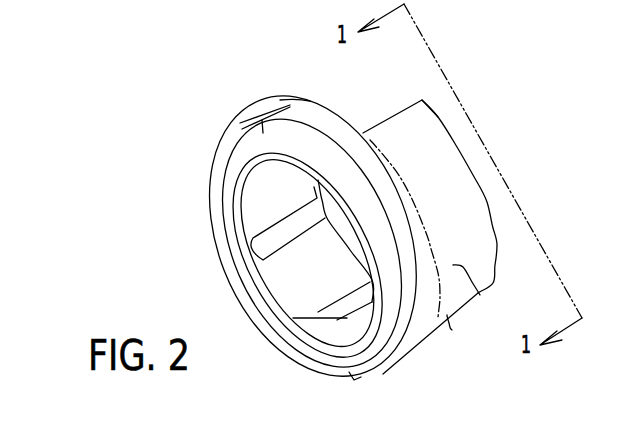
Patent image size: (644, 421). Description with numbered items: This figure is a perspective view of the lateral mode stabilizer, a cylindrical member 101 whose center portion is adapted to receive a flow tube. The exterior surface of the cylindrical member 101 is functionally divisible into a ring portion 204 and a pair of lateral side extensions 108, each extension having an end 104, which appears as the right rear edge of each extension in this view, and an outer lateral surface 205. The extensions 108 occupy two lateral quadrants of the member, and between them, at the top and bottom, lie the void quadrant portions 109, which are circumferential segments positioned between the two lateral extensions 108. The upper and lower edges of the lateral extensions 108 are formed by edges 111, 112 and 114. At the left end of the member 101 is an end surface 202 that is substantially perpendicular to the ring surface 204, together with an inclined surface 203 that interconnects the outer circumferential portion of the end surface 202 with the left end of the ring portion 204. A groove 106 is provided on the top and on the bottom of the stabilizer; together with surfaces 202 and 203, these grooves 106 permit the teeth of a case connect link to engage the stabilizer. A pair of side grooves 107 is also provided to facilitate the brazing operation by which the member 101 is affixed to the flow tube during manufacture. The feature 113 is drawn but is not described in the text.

The cylindrical member 101 is at (161, 181).
The end 104 is at (490, 210).
The groove 106 is at (255, 122).
The side groove 107 is at (252, 241).
The lateral side extension 108 is at (462, 180).
The void quadrant portion 109 is at (337, 112).
The edge of lateral extension 111 is at (452, 330).
The edge of lateral extension 112 is at (400, 113).
The flange top edge 113 is at (307, 100).
The edge of lateral extension 114 is at (337, 328).
The end surface 202 is at (233, 157).
The inclined surface 203 is at (237, 135).
The ring portion 204 is at (320, 113).
The lateral surface 205 is at (483, 297).